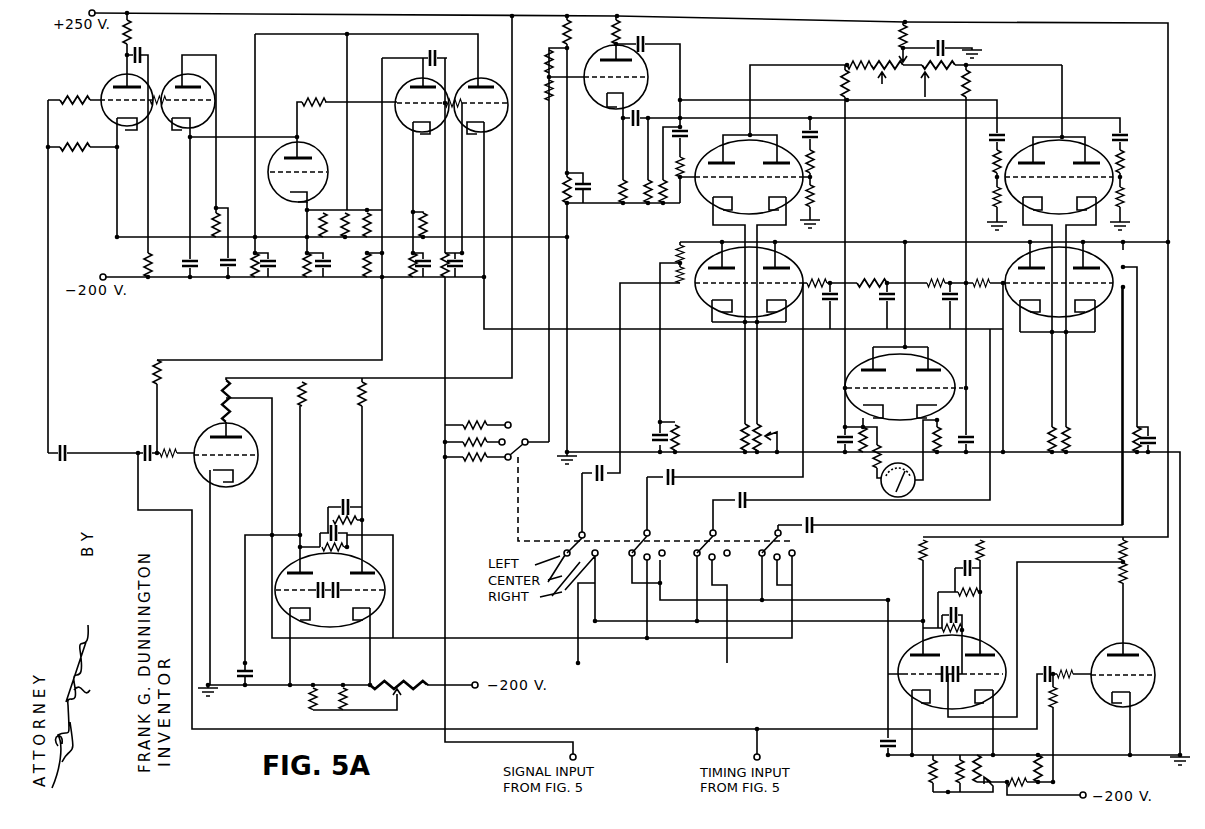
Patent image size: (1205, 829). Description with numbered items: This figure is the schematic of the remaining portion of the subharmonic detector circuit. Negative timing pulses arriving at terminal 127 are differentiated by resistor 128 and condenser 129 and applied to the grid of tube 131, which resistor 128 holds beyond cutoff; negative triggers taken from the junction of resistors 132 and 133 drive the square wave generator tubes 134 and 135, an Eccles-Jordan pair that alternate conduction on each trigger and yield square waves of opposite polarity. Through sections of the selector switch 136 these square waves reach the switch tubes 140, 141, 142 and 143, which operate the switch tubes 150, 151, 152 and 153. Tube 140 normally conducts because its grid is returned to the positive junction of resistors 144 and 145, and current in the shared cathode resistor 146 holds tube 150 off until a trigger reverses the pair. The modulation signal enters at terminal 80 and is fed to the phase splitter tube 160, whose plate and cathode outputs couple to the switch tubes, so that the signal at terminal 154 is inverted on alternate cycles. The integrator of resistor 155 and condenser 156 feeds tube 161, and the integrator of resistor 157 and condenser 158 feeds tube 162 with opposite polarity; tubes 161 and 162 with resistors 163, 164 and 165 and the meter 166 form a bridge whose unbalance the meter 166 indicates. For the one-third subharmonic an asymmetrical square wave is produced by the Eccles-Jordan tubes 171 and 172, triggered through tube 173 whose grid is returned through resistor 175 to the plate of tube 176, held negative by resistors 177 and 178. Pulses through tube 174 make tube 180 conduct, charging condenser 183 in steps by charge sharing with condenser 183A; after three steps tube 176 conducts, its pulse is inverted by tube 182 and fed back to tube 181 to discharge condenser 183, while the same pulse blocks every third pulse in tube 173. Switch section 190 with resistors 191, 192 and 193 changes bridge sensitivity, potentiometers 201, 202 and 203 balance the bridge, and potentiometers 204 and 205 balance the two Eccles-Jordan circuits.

The terminal 80 is at (577, 757).
The terminal 127 is at (761, 758).
The resistor 128 is at (1058, 705).
The condenser 129 is at (1047, 662).
The tube 131 is at (1133, 650).
The resistor 132 is at (1128, 553).
The resistor 133 is at (1118, 578).
The square wave generator tube 134 is at (912, 654).
The square wave generator tube 135 is at (975, 652).
The selector switch 136 is at (645, 531).
The switch tube 140 is at (708, 306).
The switch tube 141 is at (795, 265).
The switch tube 142 is at (1015, 268).
The switch tube 143 is at (1095, 320).
The resistor 144 is at (676, 250).
The resistor 145 is at (678, 425).
The cathode resistor 146 is at (740, 433).
The switch tube 150 is at (706, 214).
The switch tube 151 is at (797, 140).
The switch tube 152 is at (1016, 150).
The switch tube 153 is at (1087, 150).
The terminal 154 is at (847, 65).
The resistor 155 is at (844, 84).
The condenser 156 is at (843, 435).
The resistor 157 is at (970, 85).
The condenser 158 is at (966, 438).
The phase splitter tube 160 is at (600, 108).
The tube 161 is at (862, 366).
The tube 162 is at (948, 358).
The resistor 163 is at (858, 452).
The resistor 164 is at (940, 450).
The resistor 165 is at (875, 465).
The meter 166 is at (915, 488).
The tube 171 is at (290, 570).
The tube 172 is at (385, 560).
The tube 173 is at (212, 435).
The tube 174 is at (118, 78).
The resistor 175 is at (155, 372).
The tube 176 is at (403, 84).
The resistor 177 is at (367, 213).
The resistor 178 is at (367, 255).
The tube 180 is at (189, 139).
The tube 181 is at (333, 135).
The tube 182 is at (500, 80).
The condenser 183 is at (187, 258).
The condenser 183A is at (224, 260).
The selector switch section 190 is at (508, 422).
The resistor 191 is at (465, 425).
The resistor 192 is at (445, 448).
The resistor 193 is at (470, 457).
The potentiometer 201 is at (882, 84).
The potentiometer 202 is at (925, 84).
The potentiometer 203 is at (767, 430).
The potentiometer 204 is at (985, 775).
The potentiometer 205 is at (395, 693).